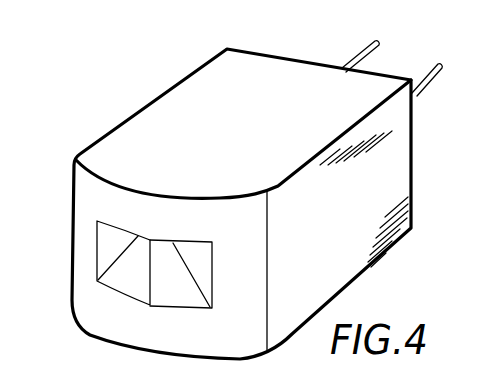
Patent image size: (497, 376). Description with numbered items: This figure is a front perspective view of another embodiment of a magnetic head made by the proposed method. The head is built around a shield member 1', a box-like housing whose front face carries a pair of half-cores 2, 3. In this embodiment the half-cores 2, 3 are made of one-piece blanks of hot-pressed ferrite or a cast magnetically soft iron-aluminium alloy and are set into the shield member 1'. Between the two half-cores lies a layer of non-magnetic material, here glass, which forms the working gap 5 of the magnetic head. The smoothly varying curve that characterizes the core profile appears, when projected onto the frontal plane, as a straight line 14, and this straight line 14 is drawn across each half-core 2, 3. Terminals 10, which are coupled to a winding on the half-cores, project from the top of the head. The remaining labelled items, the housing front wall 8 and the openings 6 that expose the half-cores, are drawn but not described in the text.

The shield member 1' is at (241, 186).
The terminals 10 is at (380, 45).
The housing front wall 8 is at (100, 318).
The openings 6 is at (103, 258).
The straight line 14 is at (110, 263).
The half-core 2 is at (123, 272).
The working gap 5 is at (154, 293).
The half-core 3 is at (173, 284).